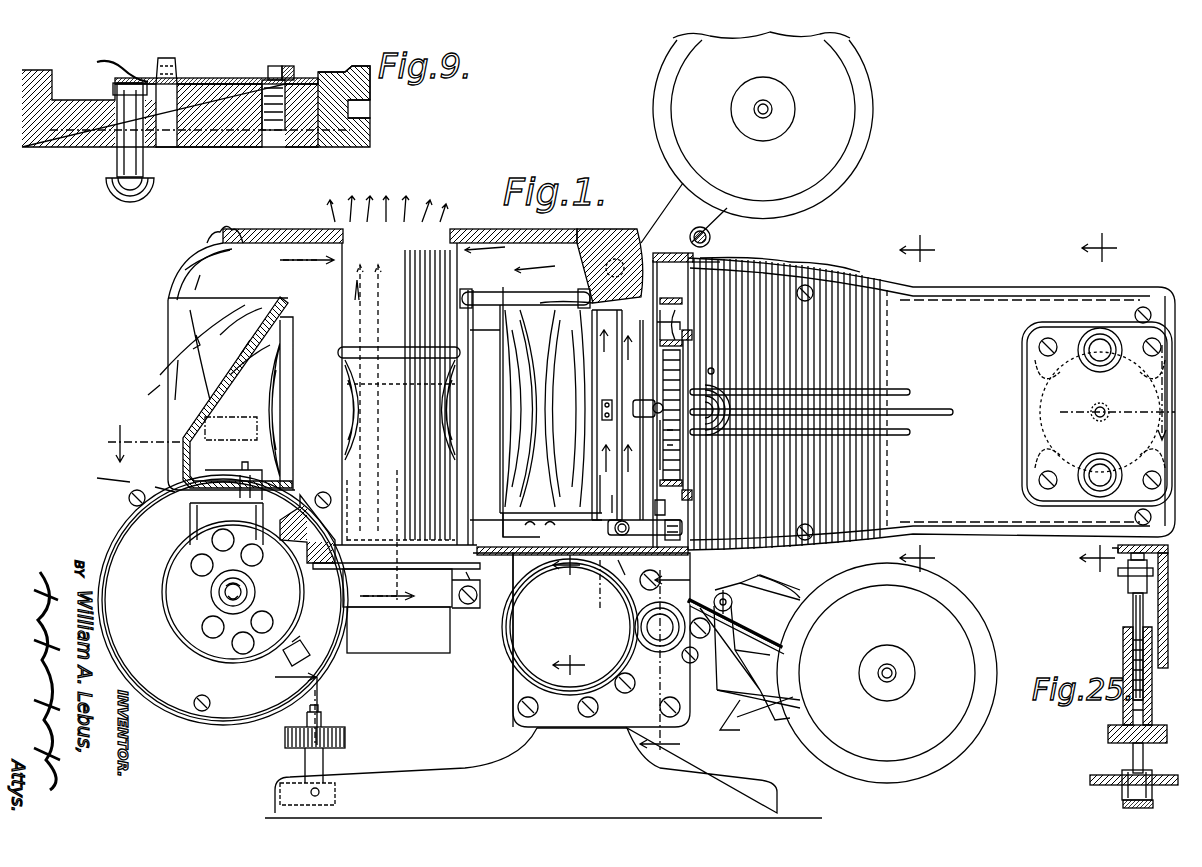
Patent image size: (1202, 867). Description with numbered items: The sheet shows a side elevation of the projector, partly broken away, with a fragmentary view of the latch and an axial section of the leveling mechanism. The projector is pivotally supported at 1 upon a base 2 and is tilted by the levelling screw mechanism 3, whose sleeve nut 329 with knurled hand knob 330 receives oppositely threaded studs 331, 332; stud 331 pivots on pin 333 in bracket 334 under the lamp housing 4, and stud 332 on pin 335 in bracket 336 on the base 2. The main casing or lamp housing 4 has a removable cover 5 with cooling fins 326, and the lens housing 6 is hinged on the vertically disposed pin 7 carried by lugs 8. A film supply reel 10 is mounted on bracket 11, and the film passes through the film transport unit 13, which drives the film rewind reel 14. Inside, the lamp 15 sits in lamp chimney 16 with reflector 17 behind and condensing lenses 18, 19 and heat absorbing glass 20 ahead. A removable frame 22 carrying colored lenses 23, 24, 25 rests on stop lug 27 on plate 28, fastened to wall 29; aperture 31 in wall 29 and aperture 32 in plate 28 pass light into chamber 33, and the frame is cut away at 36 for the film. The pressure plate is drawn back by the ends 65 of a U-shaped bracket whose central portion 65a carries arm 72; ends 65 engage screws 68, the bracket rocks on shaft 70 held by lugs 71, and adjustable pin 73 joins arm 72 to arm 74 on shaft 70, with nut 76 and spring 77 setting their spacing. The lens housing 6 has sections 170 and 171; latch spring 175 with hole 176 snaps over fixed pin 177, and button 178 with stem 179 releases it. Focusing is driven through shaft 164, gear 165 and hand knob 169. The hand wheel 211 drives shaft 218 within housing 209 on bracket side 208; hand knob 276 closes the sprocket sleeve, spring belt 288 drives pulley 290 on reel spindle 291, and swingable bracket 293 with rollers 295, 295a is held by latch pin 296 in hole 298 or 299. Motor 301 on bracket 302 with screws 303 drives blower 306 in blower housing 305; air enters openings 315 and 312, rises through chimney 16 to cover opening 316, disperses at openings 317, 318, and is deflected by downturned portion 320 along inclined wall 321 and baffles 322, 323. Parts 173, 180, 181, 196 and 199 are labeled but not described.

In FIG. 1, the pivotal support 1 is at (575, 710).
In FIG. 1, the base 2 is at (455, 788).
In FIG. 25, the base 2 is at (1088, 779).
In FIG. 1, the levelling screw mechanism 3 is at (275, 753).
In FIG. 25, the levelling screw mechanism 3 is at (1066, 582).
In FIG. 9, the main casing or lamp housing 4 is at (55, 148).
In FIG. 1, the main casing or lamp housing 4 is at (497, 575).
In FIG. 25, the main casing or lamp housing 4 is at (1118, 574).
In FIG. 1, the removable cover 5 is at (300, 229).
In FIG. 9, the lens housing 6 is at (252, 157).
In FIG. 1, the lens housing 6 is at (1009, 277).
In FIG. 1, the vertically disposed pin 7 is at (1100, 406).
In FIG. 1, the lugs 8 is at (919, 405).
In FIG. 1, the film supply reel 10 is at (895, 108).
In FIG. 1, the bracket 11 is at (676, 188).
In FIG. 1, the film transport unit 13 is at (770, 579).
In FIG. 1, the film rewind reel 14 is at (960, 745).
In FIG. 1, the lamp 15 is at (358, 420).
In FIG. 1, the lamp chimney 16 is at (408, 228).
In FIG. 1, the reflector 17 is at (272, 392).
In FIG. 1, the condensing lens 18 is at (520, 352).
In FIG. 1, the condensing lens 19 is at (568, 352).
In FIG. 1, the heat absorbing glass shielding member 20 is at (595, 362).
In FIG. 1, the removable frame 22 is at (700, 270).
In FIG. 1, the colored lens 23 is at (688, 356).
In FIG. 1, the colored lens 24 is at (715, 392).
In FIG. 1, the colored lens 25 is at (706, 460).
In FIG. 1, the stop lug 27 is at (683, 494).
In FIG. 1, the plate 28 is at (665, 328).
In FIG. 1, the wall 29 is at (672, 300).
In FIG. 1, the aperture 31 is at (668, 334).
In FIG. 1, the aperture 32 is at (672, 370).
In FIG. 1, the chamber 33 is at (620, 240).
In FIG. 1, the cut away portion 36 is at (690, 240).
In FIG. 1, the vertically disposed ends 65 is at (637, 402).
In FIG. 1, the central portion 65a is at (610, 588).
In FIG. 1, the screws 68 is at (607, 400).
In FIG. 1, the shaft 70 is at (612, 522).
In FIG. 1, the lugs 71 is at (560, 530).
In FIG. 1, the projecting arm 72 is at (622, 580).
In FIG. 1, the adjustable pin 73 is at (668, 504).
In FIG. 1, the arm 74 is at (600, 490).
In FIG. 1, the adjustable nut 76 is at (682, 518).
In FIG. 1, the spring 77 is at (640, 580).
In FIG. 1, the shaft 164 is at (1095, 405).
In FIG. 1, the gear 165 is at (1052, 411).
In FIG. 1, the hand knob 169 is at (1085, 478).
In FIG. 9, the section of lens housing 170 is at (305, 148).
In FIG. 1, the section of lens housing 170 is at (742, 264).
In FIG. 9, the section of lens housing 171 is at (340, 70).
In FIG. 1, the section of lens housing 171 is at (788, 263).
In FIG. 1, the roller 173 is at (1095, 345).
In FIG. 9, the latch spring 175 is at (228, 78).
In FIG. 9, the hole 176 is at (148, 62).
In FIG. 9, the fixed pin 177 is at (172, 60).
In FIG. 9, the hand operated button 178 is at (112, 180).
In FIG. 9, the stem 179 is at (113, 88).
In FIG. 9, the notch 180 is at (370, 138).
In FIG. 9, the screw 181 is at (365, 110).
In FIG. 1, the rack 196 is at (676, 432).
In FIG. 1, the cover plate 199 is at (1040, 372).
In FIG. 1, the side of bracket 208 is at (767, 720).
In FIG. 1, the housing 209 is at (520, 686).
In FIG. 1, the hand wheel 211 is at (508, 634).
In FIG. 1, the shaft 218 is at (599, 697).
In FIG. 1, the hand knob 276 is at (645, 629).
In FIG. 1, the spring belt 288 is at (785, 654).
In FIG. 1, the pulley 290 is at (718, 728).
In FIG. 1, the reel spindle 291 is at (900, 668).
In FIG. 1, the swingable bracket 293 is at (726, 682).
In FIG. 1, the roller 295 is at (688, 656).
In FIG. 1, the roller 295a is at (712, 662).
In FIG. 1, the spring-pressed latch pin 296 is at (730, 608).
In FIG. 1, the hole 298 is at (742, 590).
In FIG. 1, the hole 299 is at (790, 600).
In FIG. 1, the electric motor 301 is at (195, 628).
In FIG. 1, the bracket 302 is at (190, 518).
In FIG. 1, the screws 303 is at (244, 490).
In FIG. 1, the blower housing 305 is at (186, 710).
In FIG. 1, the blower 306 is at (120, 530).
In FIG. 1, the lamp housing opening 312 is at (590, 470).
In FIG. 1, the opening 315 is at (365, 565).
In FIG. 1, the opening 316 is at (361, 237).
In FIG. 1, the opening 317 is at (355, 390).
In FIG. 1, the opening 318 is at (440, 404).
In FIG. 1, the downturned portion 320 is at (190, 262).
In FIG. 1, the rearwardly inclined wall 321 is at (215, 395).
In FIG. 1, the baffle 322 is at (168, 300).
In FIG. 1, the baffle 323 is at (205, 345).
In FIG. 1, the ribbing or cooling fins 326 is at (232, 228).
In FIG. 25, the sleeve nut 329 is at (1122, 702).
In FIG. 25, the knurled hand knob 330 is at (1106, 734).
In FIG. 25, the stud 331 is at (1133, 620).
In FIG. 25, the stud 332 is at (1132, 757).
In FIG. 25, the pin 333 is at (1128, 585).
In FIG. 25, the bracket 334 is at (1130, 590).
In FIG. 25, the pin 335 is at (1120, 792).
In FIG. 25, the bracket 336 is at (1120, 806).